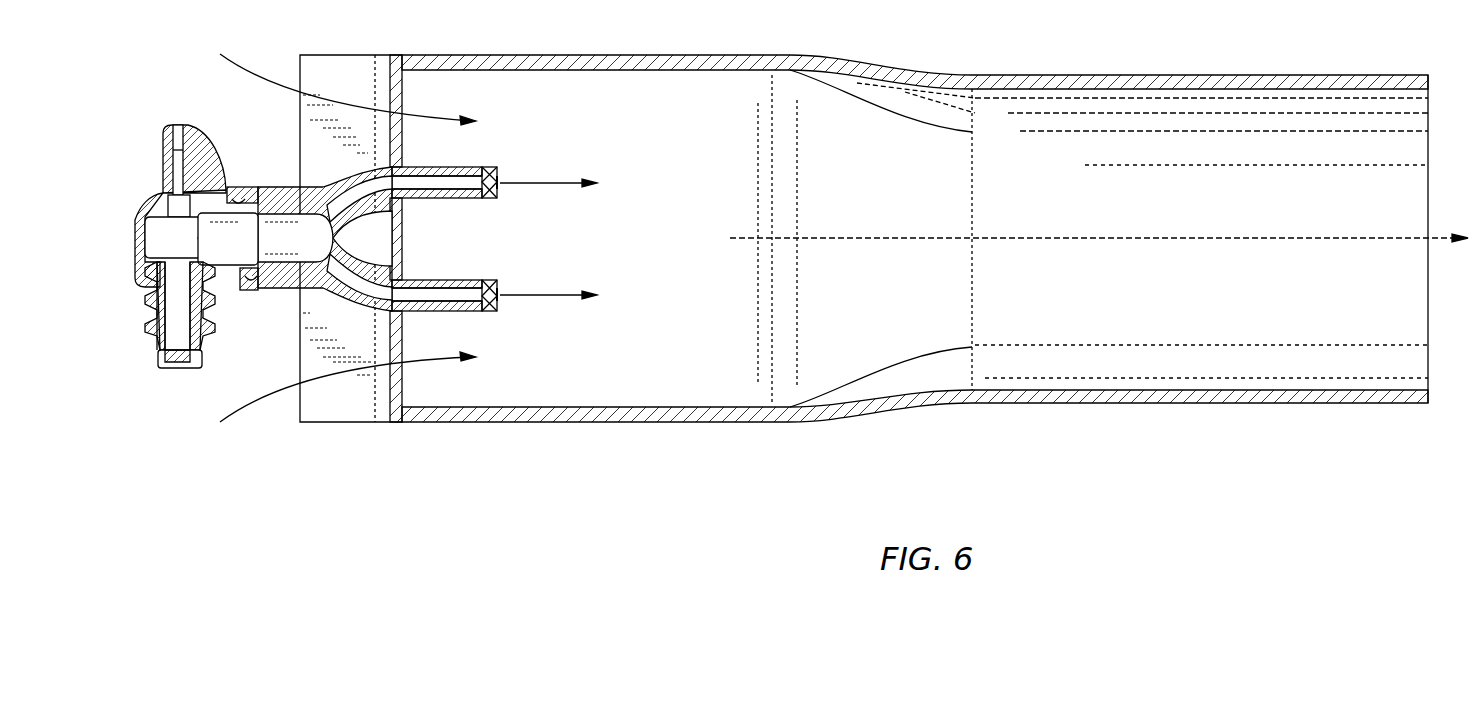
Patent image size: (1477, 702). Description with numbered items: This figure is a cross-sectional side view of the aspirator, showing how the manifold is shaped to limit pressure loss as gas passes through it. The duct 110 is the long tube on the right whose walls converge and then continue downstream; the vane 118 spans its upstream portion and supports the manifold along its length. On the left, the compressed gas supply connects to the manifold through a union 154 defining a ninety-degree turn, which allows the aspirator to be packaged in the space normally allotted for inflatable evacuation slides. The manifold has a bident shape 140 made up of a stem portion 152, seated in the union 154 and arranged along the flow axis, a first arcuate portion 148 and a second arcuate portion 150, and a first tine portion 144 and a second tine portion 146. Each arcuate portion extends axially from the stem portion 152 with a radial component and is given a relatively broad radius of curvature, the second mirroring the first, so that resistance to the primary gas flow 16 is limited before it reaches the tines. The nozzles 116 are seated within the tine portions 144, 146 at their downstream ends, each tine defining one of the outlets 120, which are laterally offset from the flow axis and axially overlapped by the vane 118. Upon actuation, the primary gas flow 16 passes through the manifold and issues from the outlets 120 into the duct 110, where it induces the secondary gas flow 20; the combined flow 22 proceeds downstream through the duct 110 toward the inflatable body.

The secondary gas flow 20 is at (253, 78).
The primary gas flow 16 is at (558, 183).
The flow direction 22 is at (1190, 240).
The duct 110 is at (905, 342).
The vane 118 is at (345, 403).
The outlets 120 is at (508, 193).
The nozzles 116 is at (481, 280).
The first tine portion 144 is at (435, 185).
The second tine portion 146 is at (420, 297).
The first arcuate portion 148 is at (365, 192).
The second arcuate portion 150 is at (367, 287).
The stem portion 152 is at (272, 238).
The union 154 is at (150, 212).
The bident shape 140 is at (320, 295).